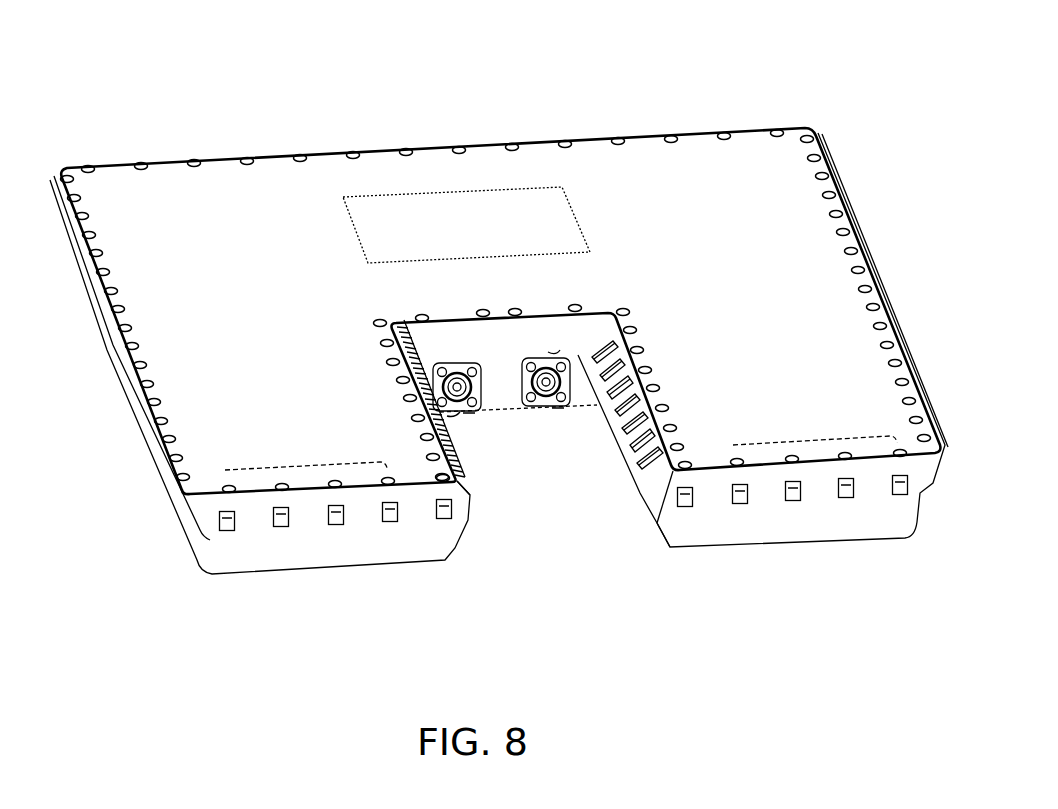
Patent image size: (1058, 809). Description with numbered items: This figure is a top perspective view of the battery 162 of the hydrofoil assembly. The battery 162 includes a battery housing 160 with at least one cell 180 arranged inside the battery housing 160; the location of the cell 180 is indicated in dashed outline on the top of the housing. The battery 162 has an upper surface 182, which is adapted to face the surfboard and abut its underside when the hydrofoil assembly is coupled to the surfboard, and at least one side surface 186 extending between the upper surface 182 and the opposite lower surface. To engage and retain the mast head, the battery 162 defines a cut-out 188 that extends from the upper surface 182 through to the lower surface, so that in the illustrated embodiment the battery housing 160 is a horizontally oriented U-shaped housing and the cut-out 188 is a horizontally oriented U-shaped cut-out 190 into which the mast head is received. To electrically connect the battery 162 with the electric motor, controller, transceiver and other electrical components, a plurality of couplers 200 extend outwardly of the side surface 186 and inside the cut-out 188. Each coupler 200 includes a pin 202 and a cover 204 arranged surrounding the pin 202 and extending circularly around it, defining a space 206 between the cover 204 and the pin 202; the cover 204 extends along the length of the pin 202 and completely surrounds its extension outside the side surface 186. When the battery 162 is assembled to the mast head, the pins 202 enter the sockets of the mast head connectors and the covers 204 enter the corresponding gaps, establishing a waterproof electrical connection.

The battery housing 160 is at (272, 155).
The battery 162 is at (673, 78).
The cell 180 is at (413, 192).
The upper surface 182 is at (272, 261).
The side surface 186 is at (513, 398).
The cut-out 188 is at (598, 505).
The U-shaped cut-out 190 is at (497, 503).
The coupler 200 is at (457, 372).
The pin 202 is at (435, 407).
The cover 204 is at (552, 356).
The space 206 is at (473, 413).